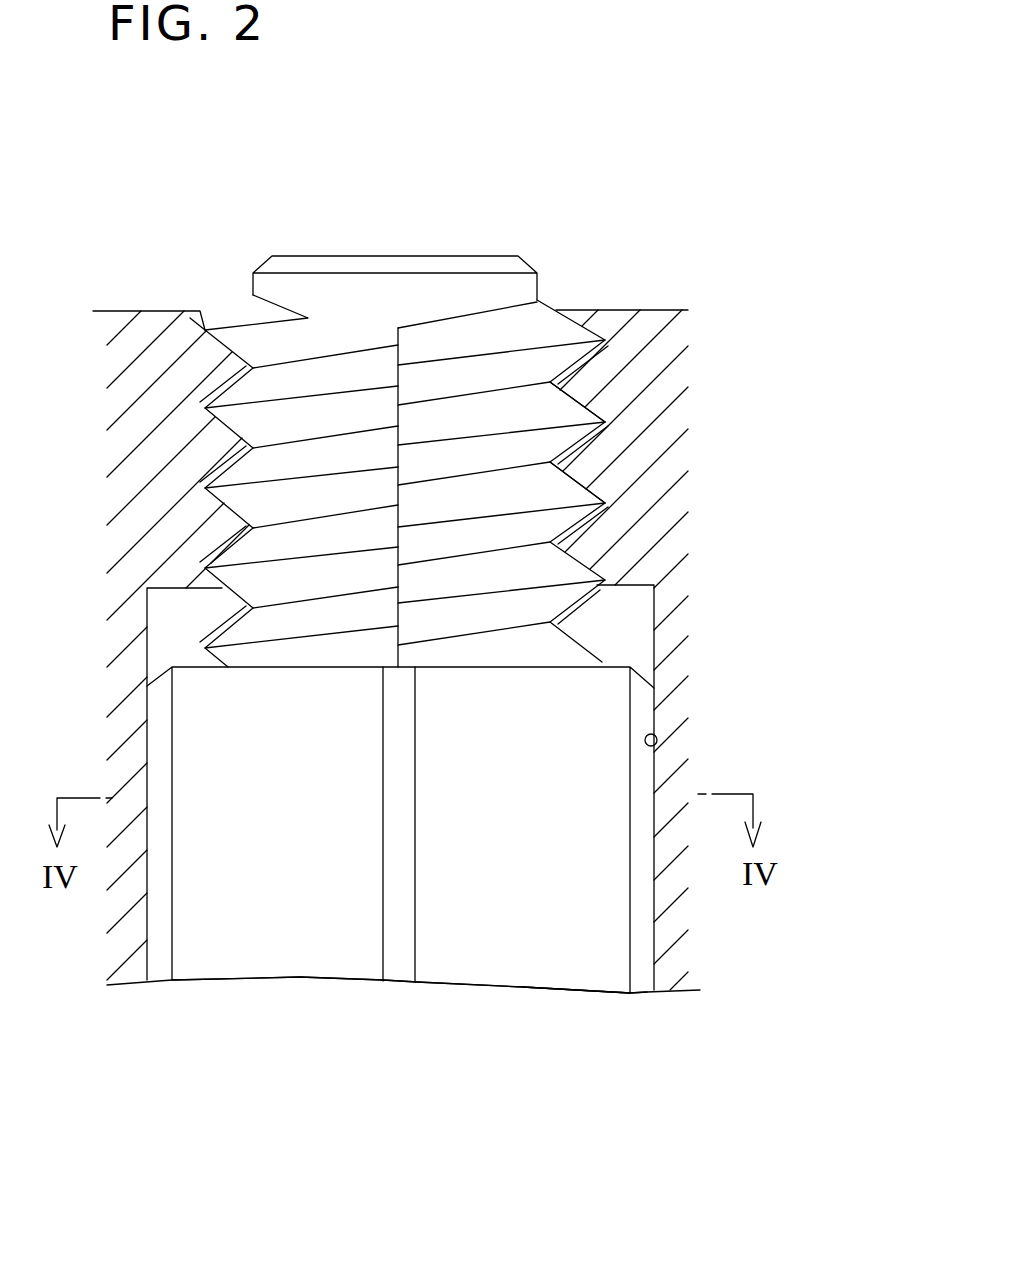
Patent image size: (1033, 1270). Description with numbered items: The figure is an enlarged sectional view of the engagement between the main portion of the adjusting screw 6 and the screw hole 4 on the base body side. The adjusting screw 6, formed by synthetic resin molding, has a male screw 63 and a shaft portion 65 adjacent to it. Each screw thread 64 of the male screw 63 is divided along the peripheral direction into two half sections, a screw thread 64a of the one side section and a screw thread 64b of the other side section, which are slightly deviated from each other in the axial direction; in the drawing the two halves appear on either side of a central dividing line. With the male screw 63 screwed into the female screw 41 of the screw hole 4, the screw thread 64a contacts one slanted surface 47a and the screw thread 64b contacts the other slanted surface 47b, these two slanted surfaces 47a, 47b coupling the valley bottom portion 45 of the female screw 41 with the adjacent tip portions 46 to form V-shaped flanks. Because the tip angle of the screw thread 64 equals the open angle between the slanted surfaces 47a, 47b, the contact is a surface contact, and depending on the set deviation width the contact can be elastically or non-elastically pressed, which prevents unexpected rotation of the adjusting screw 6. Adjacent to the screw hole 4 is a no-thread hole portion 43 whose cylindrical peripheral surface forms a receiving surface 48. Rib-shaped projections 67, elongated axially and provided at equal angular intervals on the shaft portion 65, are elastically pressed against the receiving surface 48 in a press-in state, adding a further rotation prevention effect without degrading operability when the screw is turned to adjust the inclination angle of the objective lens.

The screw hole 4 is at (215, 315).
The adjusting screw 6 is at (600, 1022).
The female screw 41 is at (627, 323).
The no-thread hole portion 43 is at (627, 630).
The valley bottom portion 45 is at (414, 432).
The tip portions 46 is at (565, 385).
The one slanted surface 47a is at (633, 483).
The other slanted surface 47b is at (607, 393).
The receiving surface 48 is at (660, 735).
The male screw 63 is at (477, 848).
The screw thread 64 is at (405, 373).
The screw thread of one side section 64a is at (328, 387).
The screw thread of other side section 64b is at (477, 350).
The shaft portion 65 is at (550, 948).
The rib-shaped projections 67 is at (165, 942).